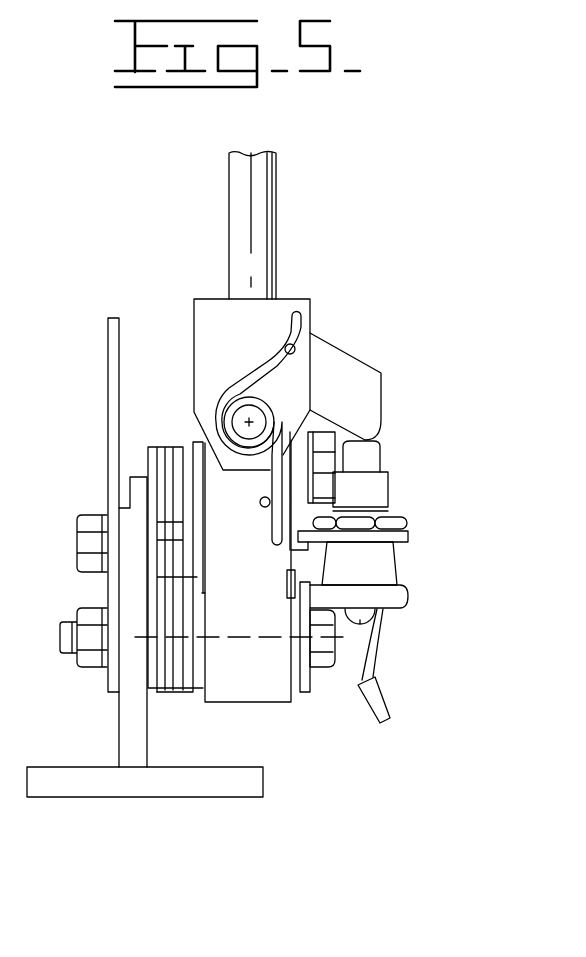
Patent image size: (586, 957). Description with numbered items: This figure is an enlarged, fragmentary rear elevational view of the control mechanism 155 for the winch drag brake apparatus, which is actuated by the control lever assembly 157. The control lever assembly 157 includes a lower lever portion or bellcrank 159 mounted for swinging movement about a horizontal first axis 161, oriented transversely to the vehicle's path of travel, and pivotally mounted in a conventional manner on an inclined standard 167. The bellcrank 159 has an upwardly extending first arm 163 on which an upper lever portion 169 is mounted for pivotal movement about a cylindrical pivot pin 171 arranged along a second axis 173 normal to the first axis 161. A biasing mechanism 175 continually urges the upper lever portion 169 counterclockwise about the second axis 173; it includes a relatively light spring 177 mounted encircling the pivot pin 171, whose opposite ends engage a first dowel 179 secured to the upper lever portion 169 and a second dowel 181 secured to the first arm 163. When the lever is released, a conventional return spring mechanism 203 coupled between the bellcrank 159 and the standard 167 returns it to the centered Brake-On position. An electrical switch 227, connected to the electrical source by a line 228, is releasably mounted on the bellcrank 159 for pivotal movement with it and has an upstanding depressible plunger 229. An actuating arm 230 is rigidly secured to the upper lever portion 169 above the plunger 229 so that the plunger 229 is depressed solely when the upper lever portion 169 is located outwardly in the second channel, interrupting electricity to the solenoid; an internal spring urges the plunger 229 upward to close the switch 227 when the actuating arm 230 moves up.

The control mechanism 155 is at (121, 283).
The control lever assembly 157 is at (222, 187).
The bellcrank 159 is at (262, 692).
The first axis 161 is at (272, 632).
The first arm 163 is at (223, 492).
The standard 167 is at (131, 728).
The upper lever portion 169 is at (236, 225).
The pivot pin 171 is at (242, 416).
The second axis 173 is at (246, 421).
The biasing mechanism 175 is at (218, 380).
The spring 177 is at (273, 372).
The first dowel 179 is at (289, 344).
The second dowel 181 is at (262, 507).
The return spring mechanism 203 is at (172, 696).
The electrical switch 227 is at (402, 563).
The line 228 is at (375, 700).
The plunger 229 is at (370, 458).
The actuating arm 230 is at (362, 397).